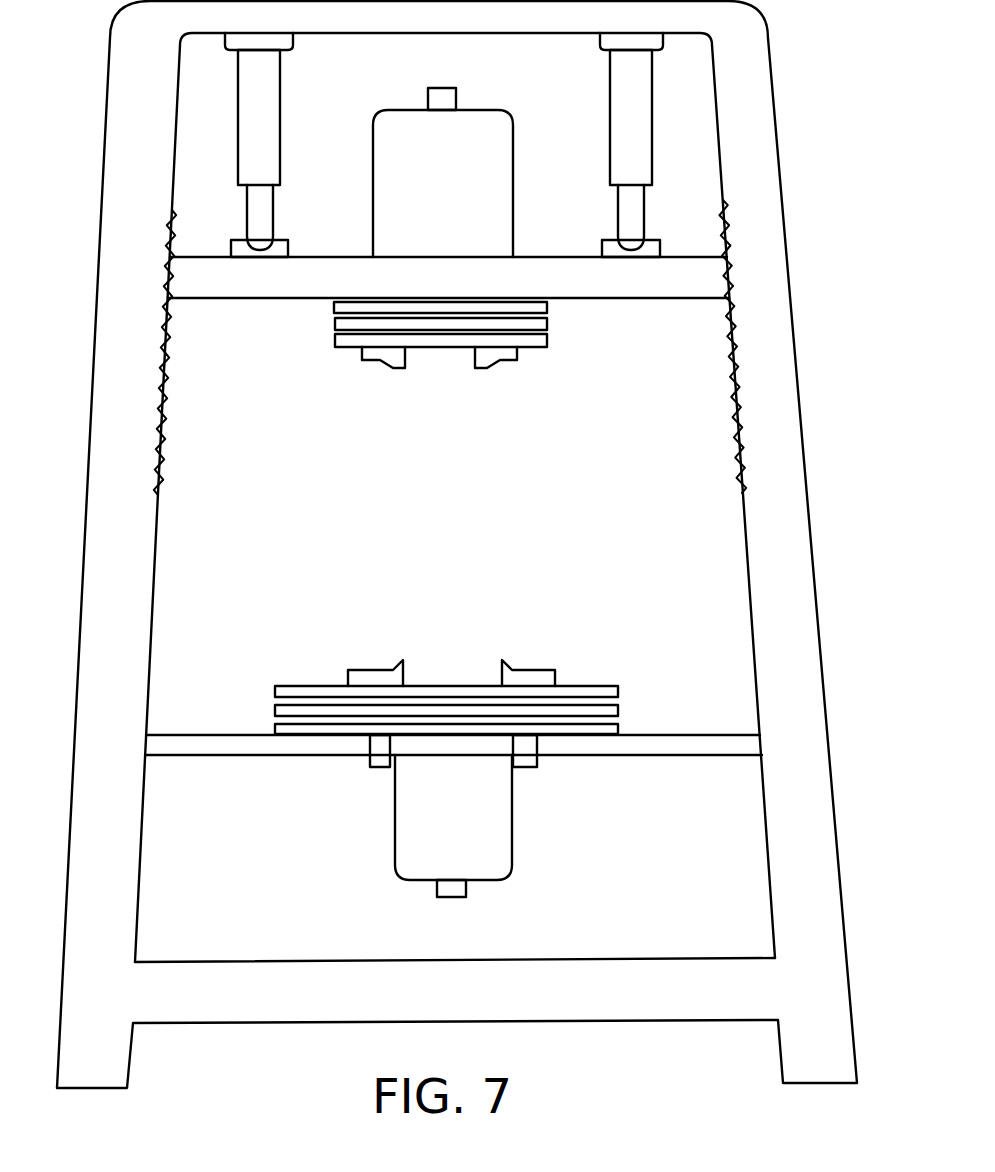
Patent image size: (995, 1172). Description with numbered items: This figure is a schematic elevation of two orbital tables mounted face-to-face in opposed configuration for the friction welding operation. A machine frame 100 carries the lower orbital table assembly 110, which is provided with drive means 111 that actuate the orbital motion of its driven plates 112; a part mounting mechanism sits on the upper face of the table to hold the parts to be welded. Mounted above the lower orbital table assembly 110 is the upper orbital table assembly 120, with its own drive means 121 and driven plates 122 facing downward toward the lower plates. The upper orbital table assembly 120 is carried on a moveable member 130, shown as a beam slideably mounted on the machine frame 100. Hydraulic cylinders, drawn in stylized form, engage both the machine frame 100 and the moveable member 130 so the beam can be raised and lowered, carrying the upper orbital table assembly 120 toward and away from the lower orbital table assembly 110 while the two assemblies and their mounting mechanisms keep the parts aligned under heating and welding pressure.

The machine frame 100 is at (753, 450).
The lower orbital table assembly 110 is at (453, 745).
The drive means 111 is at (395, 843).
The driven plates 112 is at (618, 691).
The upper orbital table assembly 120 is at (440, 370).
The drive means of upper orbital table assembly 121 is at (515, 202).
The driven plates of upper orbital table assembly 122 is at (547, 307).
The moveable member 130 is at (273, 285).